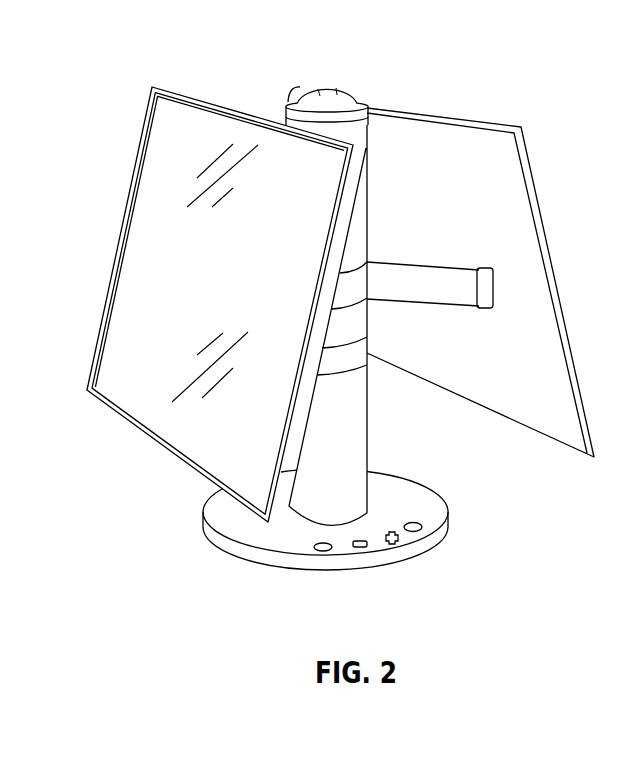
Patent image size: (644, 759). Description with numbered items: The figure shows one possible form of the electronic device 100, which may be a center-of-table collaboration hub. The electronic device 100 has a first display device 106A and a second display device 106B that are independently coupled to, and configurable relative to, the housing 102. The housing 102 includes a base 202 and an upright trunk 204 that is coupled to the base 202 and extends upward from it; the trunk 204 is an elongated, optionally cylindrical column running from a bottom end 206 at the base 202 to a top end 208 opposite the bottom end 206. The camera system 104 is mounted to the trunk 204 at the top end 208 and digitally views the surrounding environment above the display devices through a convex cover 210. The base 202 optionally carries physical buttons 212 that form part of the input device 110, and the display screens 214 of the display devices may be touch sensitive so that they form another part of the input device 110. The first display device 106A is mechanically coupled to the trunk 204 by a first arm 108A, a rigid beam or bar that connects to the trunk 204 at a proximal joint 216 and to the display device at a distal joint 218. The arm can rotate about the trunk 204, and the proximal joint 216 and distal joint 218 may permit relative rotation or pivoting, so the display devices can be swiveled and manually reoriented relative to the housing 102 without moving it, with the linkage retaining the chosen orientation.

The electronic device 100 is at (258, 50).
The housing 102 is at (367, 434).
The camera system 104 is at (322, 83).
The first display device 106A is at (523, 143).
The second display device 106B is at (134, 165).
The first arm 108A is at (437, 272).
The input device 110 is at (434, 539).
The base 202 is at (250, 545).
The trunk 204 is at (348, 394).
The bottom end 206 is at (303, 530).
The top end 208 is at (372, 117).
The convex cover 210 is at (333, 97).
The physical buttons 212 is at (418, 530).
The display screens 214 is at (168, 277).
The proximal joint 216 is at (373, 306).
The distal joint 218 is at (498, 267).